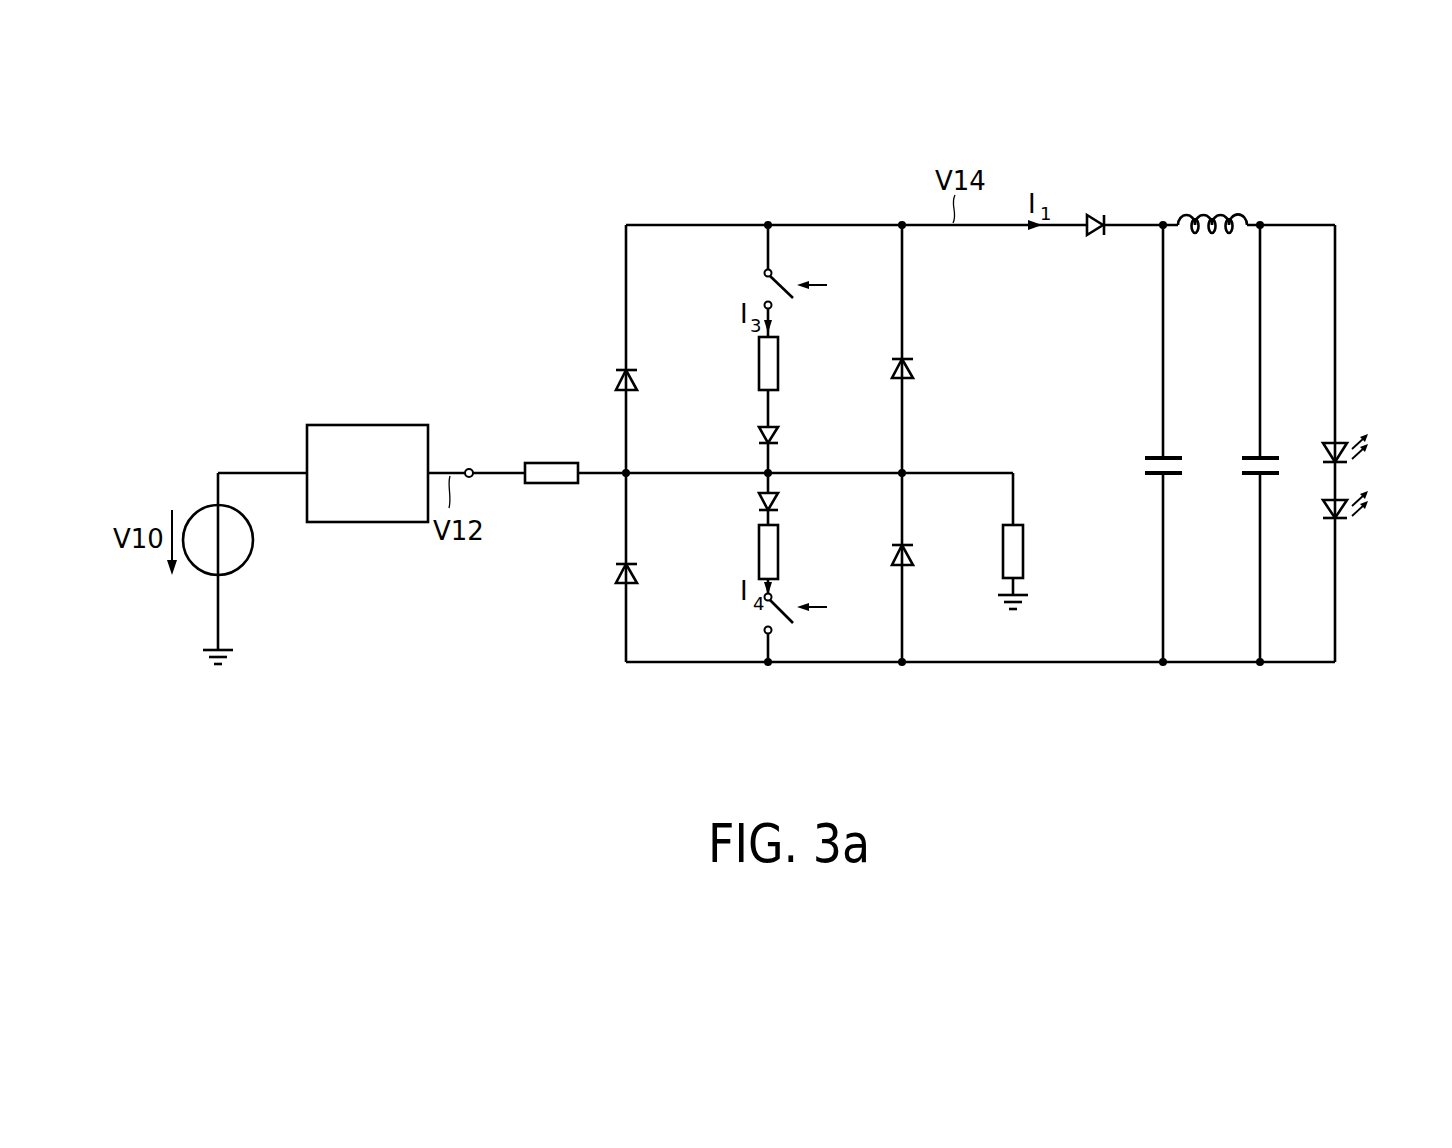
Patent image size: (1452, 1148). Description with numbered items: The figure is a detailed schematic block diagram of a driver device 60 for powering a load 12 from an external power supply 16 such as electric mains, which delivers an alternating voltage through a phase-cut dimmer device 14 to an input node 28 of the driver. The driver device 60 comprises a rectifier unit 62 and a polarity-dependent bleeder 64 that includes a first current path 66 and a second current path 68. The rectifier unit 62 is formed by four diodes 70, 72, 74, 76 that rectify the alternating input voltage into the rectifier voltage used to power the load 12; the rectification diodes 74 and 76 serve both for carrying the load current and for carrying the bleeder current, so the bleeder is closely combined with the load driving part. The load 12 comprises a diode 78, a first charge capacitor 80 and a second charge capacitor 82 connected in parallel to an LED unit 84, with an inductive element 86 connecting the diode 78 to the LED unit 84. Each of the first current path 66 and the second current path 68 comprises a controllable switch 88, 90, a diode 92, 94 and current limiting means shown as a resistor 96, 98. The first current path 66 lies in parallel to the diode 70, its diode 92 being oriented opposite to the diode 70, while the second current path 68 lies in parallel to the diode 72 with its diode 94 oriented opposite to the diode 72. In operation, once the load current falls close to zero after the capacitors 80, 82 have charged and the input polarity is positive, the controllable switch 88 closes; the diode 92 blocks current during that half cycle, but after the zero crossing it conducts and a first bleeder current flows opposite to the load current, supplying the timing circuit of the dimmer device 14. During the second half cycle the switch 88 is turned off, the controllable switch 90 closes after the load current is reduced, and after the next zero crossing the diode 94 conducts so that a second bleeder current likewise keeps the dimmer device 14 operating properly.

The load 12 is at (1385, 232).
The dimmer device 14 is at (366, 432).
The external power supply 16 is at (196, 566).
The input node 28 is at (469, 468).
The driver device 60 is at (533, 229).
The rectifier unit 62 is at (638, 722).
The polarity-dependent bleeder 64 is at (766, 682).
The first current path 66 is at (766, 250).
The second current path 68 is at (767, 647).
The diode 70 is at (616, 380).
The diode 72 is at (616, 577).
The diode 74 is at (915, 370).
The diode 76 is at (915, 557).
The diode 78 is at (1090, 213).
The first charge capacitor 80 is at (1148, 453).
The second charge capacitor 82 is at (1248, 453).
The LED unit 84 is at (1338, 521).
The inductive element 86 is at (1238, 212).
The controllable switch 88 is at (772, 274).
The controllable switch 90 is at (771, 599).
The diode 92 is at (778, 437).
The diode 94 is at (778, 502).
The resistor 96 is at (768, 362).
The resistor 98 is at (768, 555).